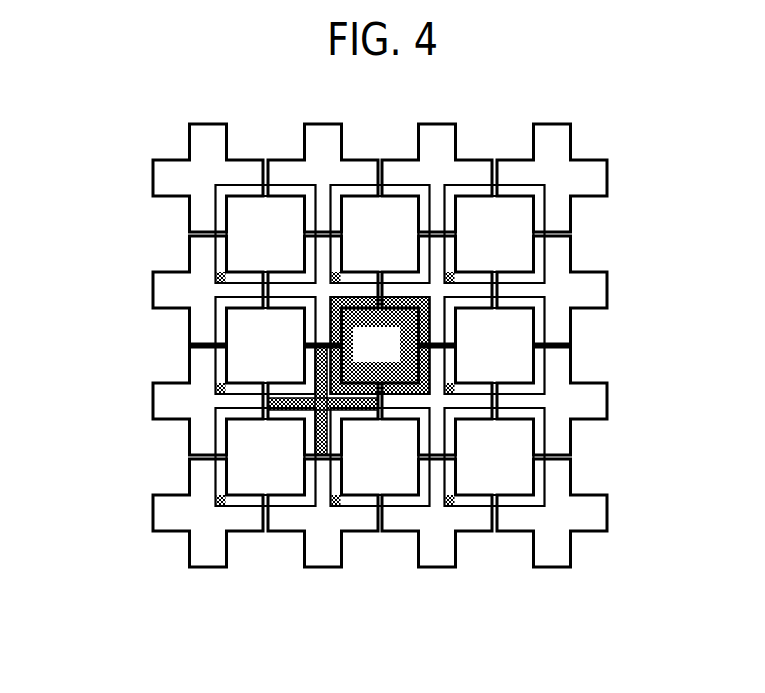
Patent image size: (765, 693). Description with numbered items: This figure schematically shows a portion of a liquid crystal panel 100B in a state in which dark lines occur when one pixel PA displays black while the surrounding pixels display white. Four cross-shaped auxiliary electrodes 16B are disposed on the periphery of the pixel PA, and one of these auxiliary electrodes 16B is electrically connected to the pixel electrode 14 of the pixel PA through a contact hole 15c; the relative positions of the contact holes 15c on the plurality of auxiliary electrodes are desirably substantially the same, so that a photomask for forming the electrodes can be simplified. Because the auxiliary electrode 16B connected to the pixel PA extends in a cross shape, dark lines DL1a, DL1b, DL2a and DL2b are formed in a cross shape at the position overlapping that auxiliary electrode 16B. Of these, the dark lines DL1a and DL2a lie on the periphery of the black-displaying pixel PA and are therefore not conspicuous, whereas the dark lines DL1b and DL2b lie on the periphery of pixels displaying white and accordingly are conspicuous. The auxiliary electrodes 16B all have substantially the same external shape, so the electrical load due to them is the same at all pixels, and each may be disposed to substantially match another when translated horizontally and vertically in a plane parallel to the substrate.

The display device 100B is at (645, 137).
The pixel electrode 14 is at (547, 215).
The contact hole 15c is at (452, 277).
The auxiliary electrode 16B is at (565, 327).
The pixel PA is at (395, 361).
The dark line DL1a is at (343, 415).
The dark line DL1b is at (283, 392).
The dark line DL2a is at (333, 387).
The dark line DL2b is at (320, 433).